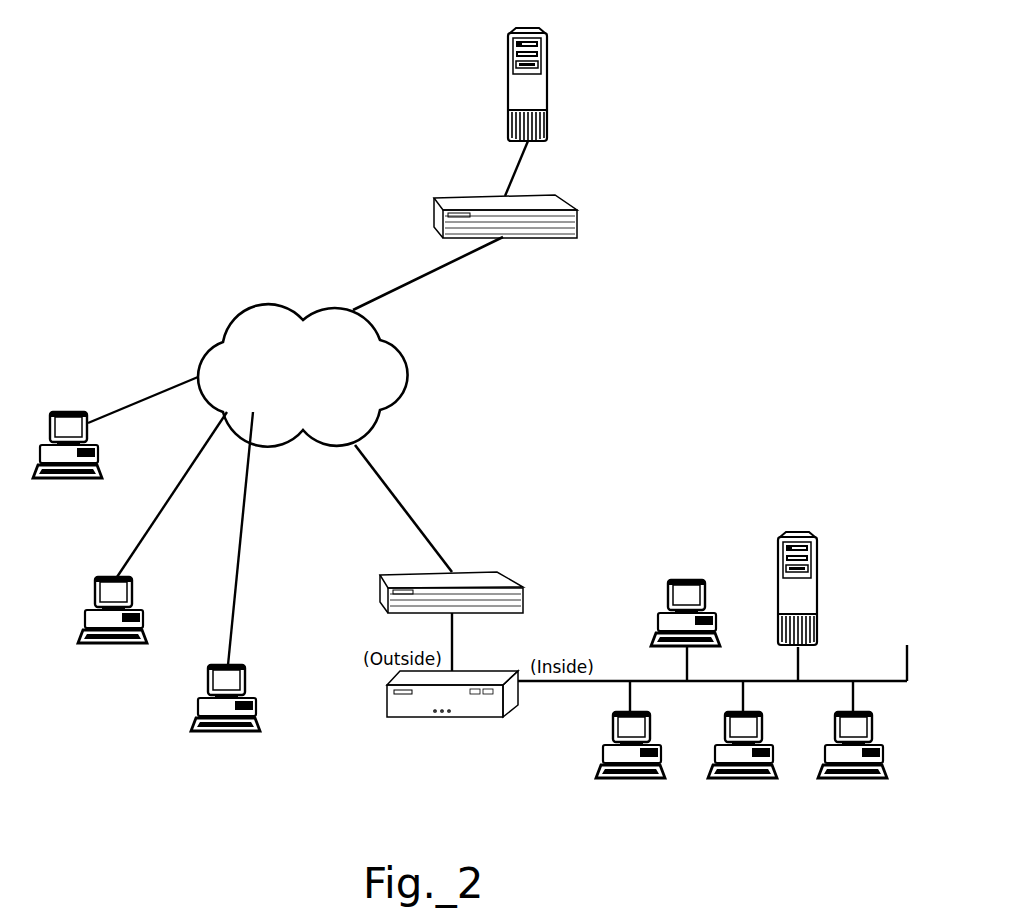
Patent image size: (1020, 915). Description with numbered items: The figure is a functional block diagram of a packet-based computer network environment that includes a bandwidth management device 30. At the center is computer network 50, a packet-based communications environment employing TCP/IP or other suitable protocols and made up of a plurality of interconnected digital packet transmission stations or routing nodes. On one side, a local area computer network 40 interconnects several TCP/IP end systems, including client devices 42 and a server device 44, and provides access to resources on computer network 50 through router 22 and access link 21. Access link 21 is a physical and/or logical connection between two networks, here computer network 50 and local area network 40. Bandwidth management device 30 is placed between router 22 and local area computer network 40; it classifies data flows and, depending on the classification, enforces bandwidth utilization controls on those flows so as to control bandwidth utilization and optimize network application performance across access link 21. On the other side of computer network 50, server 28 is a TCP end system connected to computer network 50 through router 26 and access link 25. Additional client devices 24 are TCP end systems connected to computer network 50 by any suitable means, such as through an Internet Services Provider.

The access link 21 is at (450, 572).
The router 22 is at (487, 572).
The client devices 24 is at (68, 480).
The access link 25 is at (487, 245).
The router 26 is at (538, 240).
The server 28 is at (548, 82).
The bandwidth management device 30 is at (485, 717).
The local area computer network 40 is at (907, 645).
The client devices 42 is at (680, 580).
The server device 44 is at (807, 532).
The computer network 50 is at (246, 308).